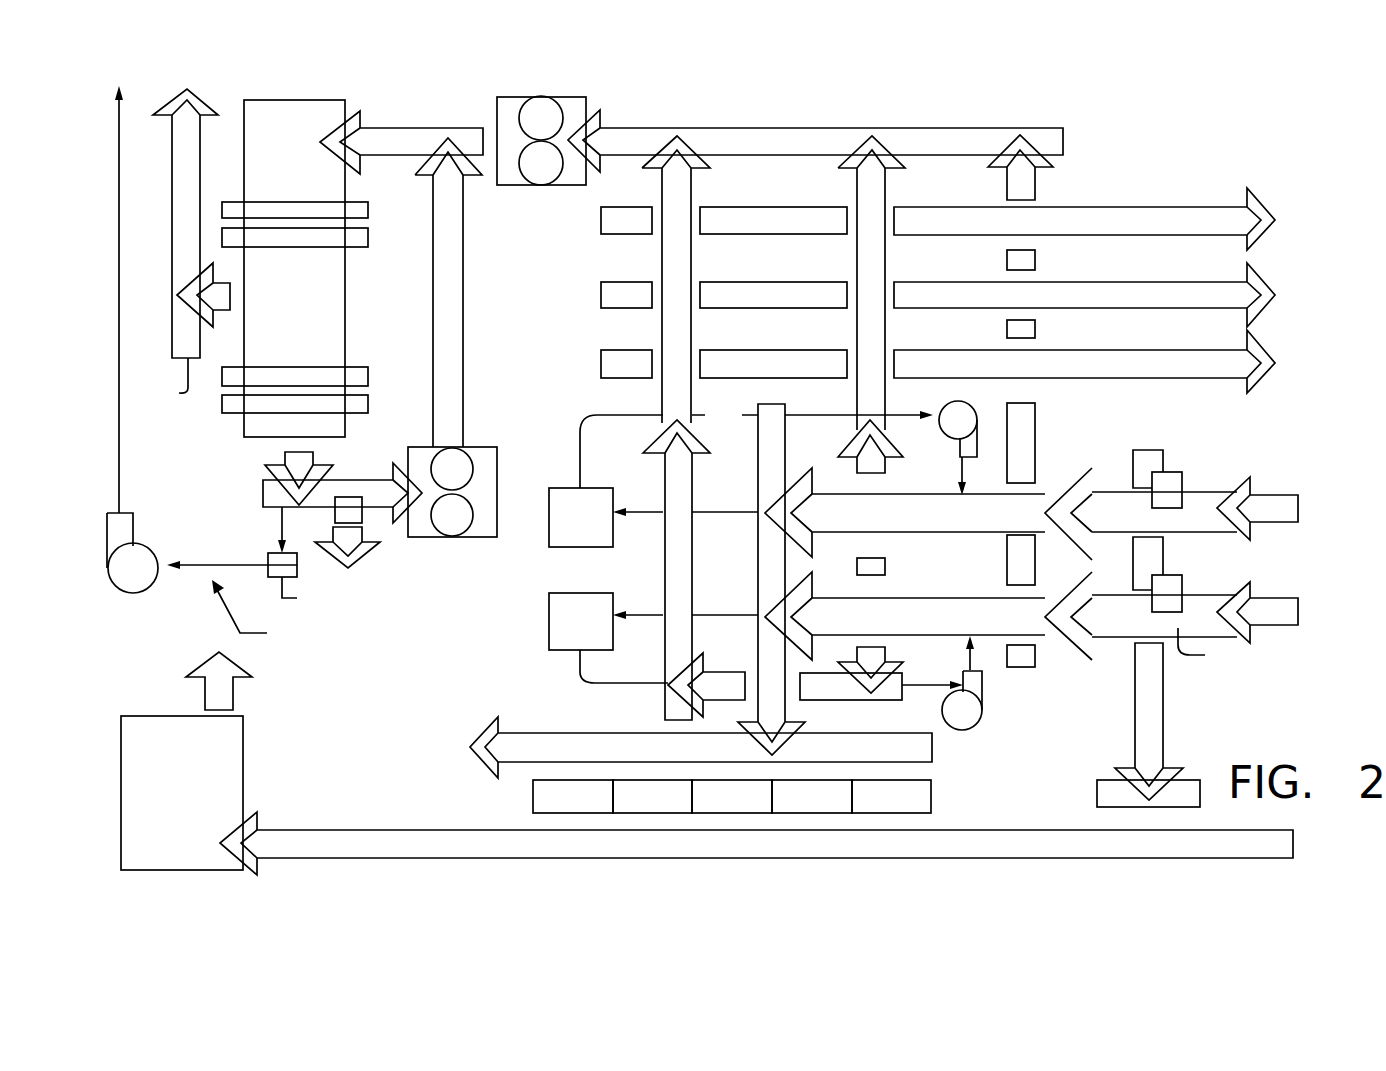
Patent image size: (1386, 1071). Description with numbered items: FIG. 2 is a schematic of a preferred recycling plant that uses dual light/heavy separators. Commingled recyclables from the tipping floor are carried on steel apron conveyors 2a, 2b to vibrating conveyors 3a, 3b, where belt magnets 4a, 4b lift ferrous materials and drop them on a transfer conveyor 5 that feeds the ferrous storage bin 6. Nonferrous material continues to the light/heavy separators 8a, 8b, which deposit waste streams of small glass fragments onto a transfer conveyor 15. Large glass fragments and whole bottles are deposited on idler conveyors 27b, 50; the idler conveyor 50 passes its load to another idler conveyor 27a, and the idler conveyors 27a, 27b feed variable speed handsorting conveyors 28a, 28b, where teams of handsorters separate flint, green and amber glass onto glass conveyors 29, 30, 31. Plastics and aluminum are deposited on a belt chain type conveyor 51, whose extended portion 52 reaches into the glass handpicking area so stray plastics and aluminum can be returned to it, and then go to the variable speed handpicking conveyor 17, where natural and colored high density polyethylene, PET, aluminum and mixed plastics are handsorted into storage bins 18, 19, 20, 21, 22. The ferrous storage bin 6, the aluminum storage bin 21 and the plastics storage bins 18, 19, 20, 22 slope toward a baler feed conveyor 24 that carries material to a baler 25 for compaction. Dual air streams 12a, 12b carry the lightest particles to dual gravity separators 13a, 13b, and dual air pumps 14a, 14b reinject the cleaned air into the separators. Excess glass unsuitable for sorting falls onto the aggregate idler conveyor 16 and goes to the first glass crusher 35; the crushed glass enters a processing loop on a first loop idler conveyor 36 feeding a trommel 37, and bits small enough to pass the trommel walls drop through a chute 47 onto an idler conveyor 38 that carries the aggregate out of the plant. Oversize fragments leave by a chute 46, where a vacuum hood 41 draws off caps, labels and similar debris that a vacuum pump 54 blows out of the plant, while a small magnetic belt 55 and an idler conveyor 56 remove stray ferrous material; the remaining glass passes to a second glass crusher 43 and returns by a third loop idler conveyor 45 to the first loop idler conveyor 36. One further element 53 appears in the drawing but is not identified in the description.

The steel apron conveyor 2a is at (1277, 620).
The steel apron conveyor 2b is at (1270, 502).
The vibrating conveyor 3a is at (1209, 648).
The vibrating conveyor 3b is at (1163, 552).
The belt magnet 4a is at (1173, 590).
The belt magnet 4b is at (1173, 480).
The transfer conveyor 5 is at (1138, 718).
The ferrous storage bin 6 is at (1105, 793).
The light/heavy separator 8a is at (965, 610).
The light/heavy separator 8b is at (967, 527).
The air stream 12a is at (703, 615).
The air stream 12b is at (703, 510).
The gravity separator 13a is at (549, 632).
The gravity separator 13b is at (567, 545).
The air pump 14a is at (968, 712).
The air pump 14b is at (950, 428).
The transfer conveyor 15 is at (1020, 440).
The aggregate idler conveyor 16 is at (782, 132).
The variable speed handpicking conveyor 17 is at (618, 730).
The plastics storage bin 18 is at (891, 796).
The plastics storage bin 19 is at (812, 796).
The plastics storage bin 20 is at (732, 796).
The aluminum storage bin 21 is at (652, 796).
The plastics storage bin 22 is at (573, 796).
The baler feed conveyor 24 is at (965, 832).
The baler 25 is at (225, 762).
The idler conveyor 27a is at (672, 592).
The idler conveyor 27b is at (868, 560).
The variable speed handsorting conveyor 28a is at (672, 262).
The variable speed handsorting conveyor 28b is at (870, 175).
The glass conveyor 29 is at (1252, 360).
The glass conveyor 30 is at (1257, 283).
The glass conveyor 31 is at (1260, 210).
The first glass crusher 35 is at (545, 108).
The first loop idler conveyor 36 is at (426, 128).
The trommel 37 is at (335, 312).
The idler conveyor 38 is at (162, 379).
The vacuum hood 41 is at (259, 615).
The second glass crusher 43 is at (490, 475).
The third loop idler conveyor 45 is at (452, 283).
The chute 46 is at (303, 467).
The chute 47 is at (202, 302).
The idler conveyor 50 is at (837, 692).
The belt chain type conveyor 51 is at (763, 572).
The extended portion 52 is at (756, 446).
The controller 53 is at (299, 561).
The vacuum pump 54 is at (110, 577).
The small magnetic belt 55 is at (352, 500).
The idler conveyor 56 is at (352, 557).